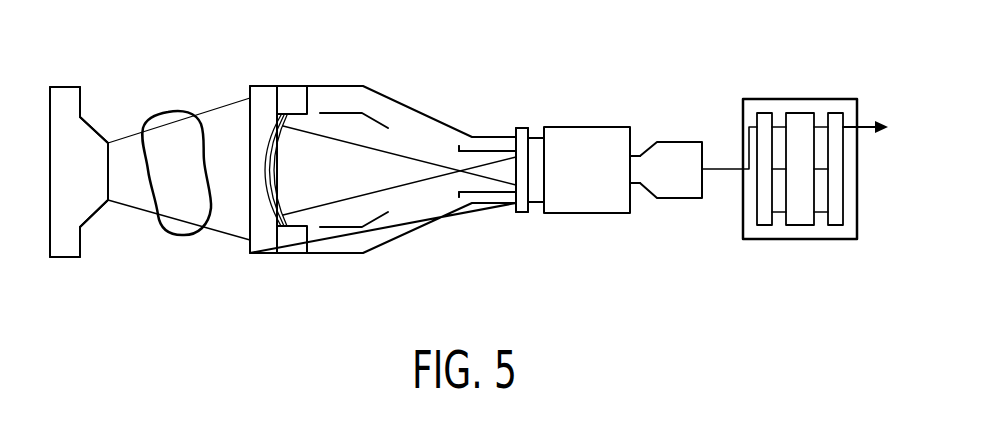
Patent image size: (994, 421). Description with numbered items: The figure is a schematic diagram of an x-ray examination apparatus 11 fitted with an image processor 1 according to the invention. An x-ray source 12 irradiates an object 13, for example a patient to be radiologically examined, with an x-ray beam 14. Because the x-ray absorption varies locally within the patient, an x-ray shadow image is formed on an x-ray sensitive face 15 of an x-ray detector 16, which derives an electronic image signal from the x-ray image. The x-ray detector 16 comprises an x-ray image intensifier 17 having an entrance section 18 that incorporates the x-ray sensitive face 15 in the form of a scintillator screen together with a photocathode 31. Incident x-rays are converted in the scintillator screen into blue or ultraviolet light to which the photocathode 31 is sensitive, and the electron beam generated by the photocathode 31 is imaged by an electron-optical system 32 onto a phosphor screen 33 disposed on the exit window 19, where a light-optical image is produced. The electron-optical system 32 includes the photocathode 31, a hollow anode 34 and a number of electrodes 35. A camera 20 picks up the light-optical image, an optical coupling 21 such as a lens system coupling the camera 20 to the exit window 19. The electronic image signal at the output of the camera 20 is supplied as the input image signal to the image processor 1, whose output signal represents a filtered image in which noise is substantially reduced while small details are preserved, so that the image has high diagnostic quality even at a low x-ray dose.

The image processor 1 is at (800, 98).
The x-ray examination apparatus 11 is at (143, 43).
The x-ray source 12 is at (62, 91).
The object 13 is at (170, 115).
The x-ray beam 14 is at (127, 207).
The x-ray sensitive face 15 is at (250, 171).
The x-ray detector 16 is at (541, 214).
The x-ray image intensifier 17 is at (333, 85).
The entrance section 18 is at (340, 193).
The exit window 19 is at (538, 137).
The camera 20 is at (678, 141).
The optical coupling 21 is at (585, 127).
The photocathode 31 is at (273, 158).
The electron-optical system 32 is at (398, 177).
The phosphor screen 33 is at (498, 174).
The hollow anode 34 is at (467, 136).
The electrodes 35 is at (390, 130).